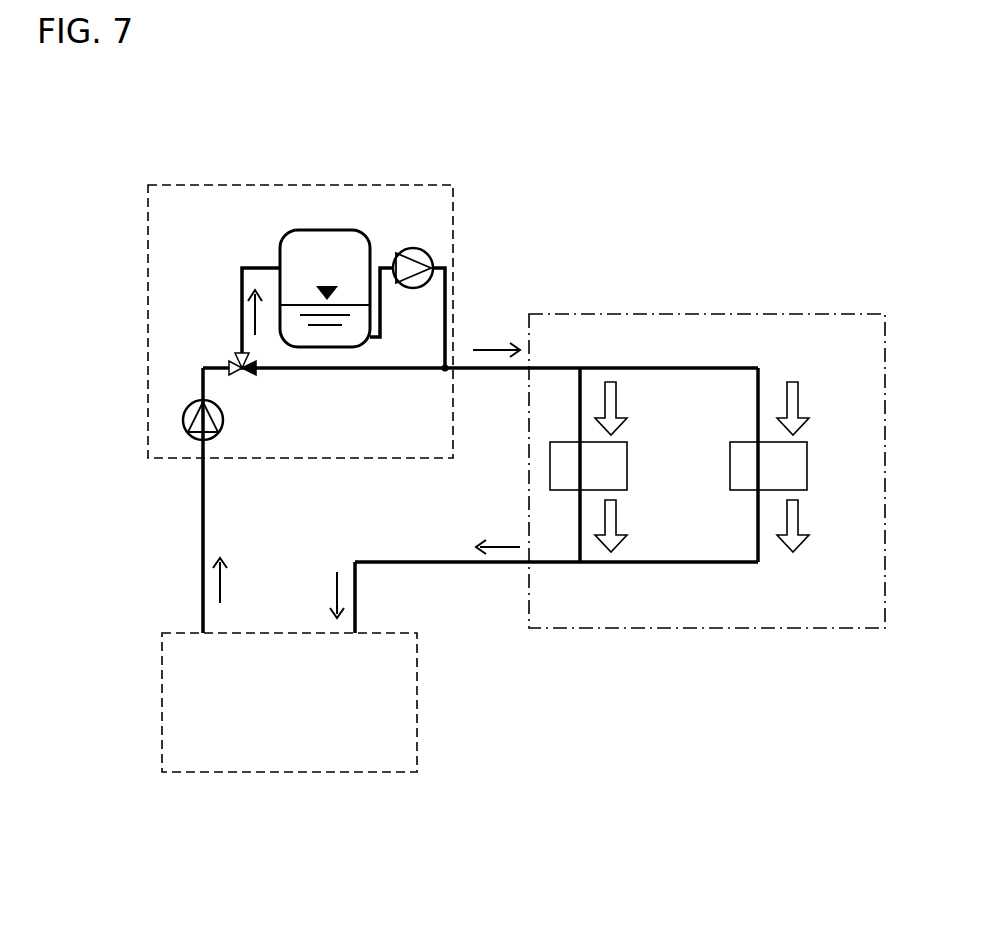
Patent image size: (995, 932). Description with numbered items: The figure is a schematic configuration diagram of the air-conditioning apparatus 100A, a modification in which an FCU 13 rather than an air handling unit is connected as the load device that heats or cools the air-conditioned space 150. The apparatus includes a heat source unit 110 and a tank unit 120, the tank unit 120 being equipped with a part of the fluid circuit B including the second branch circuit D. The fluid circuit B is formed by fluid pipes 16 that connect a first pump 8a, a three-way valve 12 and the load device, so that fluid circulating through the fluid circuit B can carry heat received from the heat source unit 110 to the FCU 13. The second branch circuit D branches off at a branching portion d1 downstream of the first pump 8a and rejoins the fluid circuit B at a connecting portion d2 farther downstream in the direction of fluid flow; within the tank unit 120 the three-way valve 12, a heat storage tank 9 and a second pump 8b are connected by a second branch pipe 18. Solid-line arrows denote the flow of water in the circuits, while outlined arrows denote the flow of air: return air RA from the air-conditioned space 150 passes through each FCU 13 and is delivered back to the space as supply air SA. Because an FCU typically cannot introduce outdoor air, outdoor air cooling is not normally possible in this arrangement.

The air-conditioning apparatus 100A is at (116, 406).
The tank unit 120 is at (148, 278).
The air-conditioned space 150 is at (715, 313).
The heat source unit 110 is at (175, 633).
The fluid pipes 16 is at (203, 478).
The second branch pipe 18 is at (242, 288).
The three-way valve 12 is at (238, 362).
The heat storage tank 9 is at (370, 258).
The second pump 8b is at (413, 289).
The first pump 8a is at (222, 425).
The branching portion d1 is at (246, 372).
The connecting portion d2 is at (445, 371).
The FCU 13 is at (627, 470).
The second branch circuit D is at (252, 256).
The fluid circuit B is at (428, 556).
The return air RA is at (713, 408).
The supply air SA is at (713, 526).